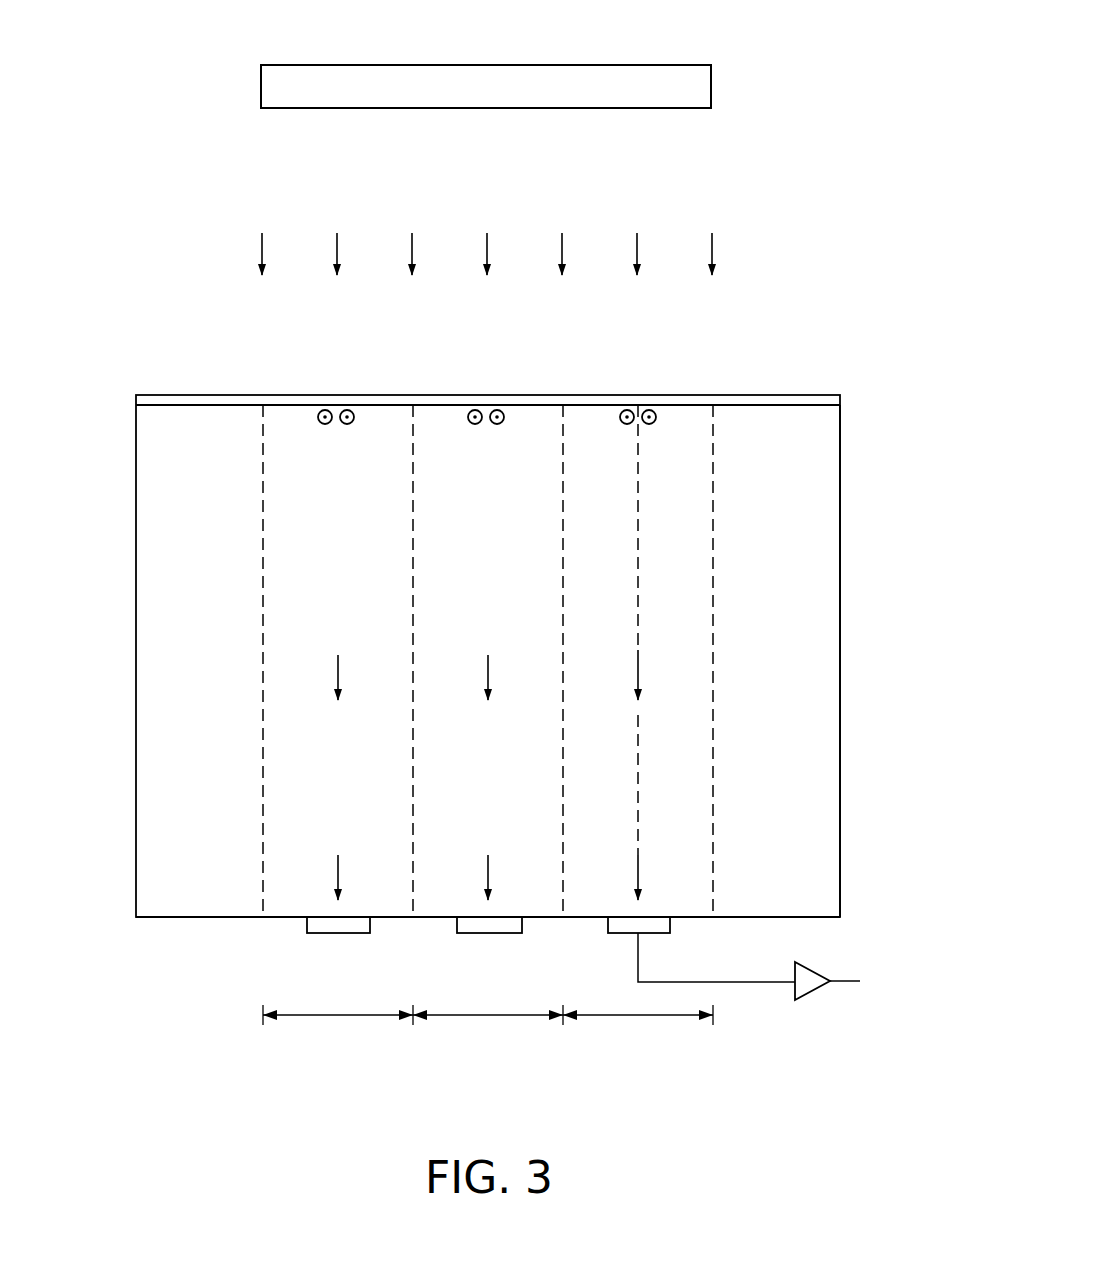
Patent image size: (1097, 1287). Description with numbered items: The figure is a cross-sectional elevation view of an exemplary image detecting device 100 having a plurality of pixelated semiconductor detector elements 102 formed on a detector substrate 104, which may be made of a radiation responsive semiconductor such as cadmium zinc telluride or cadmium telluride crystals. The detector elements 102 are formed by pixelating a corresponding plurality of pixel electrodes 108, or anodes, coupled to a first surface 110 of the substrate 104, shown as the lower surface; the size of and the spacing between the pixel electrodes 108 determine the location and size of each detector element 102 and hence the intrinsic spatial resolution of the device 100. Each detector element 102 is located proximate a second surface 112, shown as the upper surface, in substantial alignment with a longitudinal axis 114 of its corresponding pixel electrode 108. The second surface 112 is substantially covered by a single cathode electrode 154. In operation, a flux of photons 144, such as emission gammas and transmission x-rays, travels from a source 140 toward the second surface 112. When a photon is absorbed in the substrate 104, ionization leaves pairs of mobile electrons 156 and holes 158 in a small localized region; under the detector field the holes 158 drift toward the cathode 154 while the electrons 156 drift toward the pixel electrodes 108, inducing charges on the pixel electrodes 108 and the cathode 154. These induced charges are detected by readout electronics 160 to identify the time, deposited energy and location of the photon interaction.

The image detecting device 100 is at (182, 352).
The pixelated semiconductor detector element 102 is at (340, 1017).
The detector substrate 104 is at (840, 683).
The pixel electrode 108 is at (338, 934).
The first surface 110 is at (817, 920).
The second surface 112 is at (158, 406).
The longitudinal axis 114 is at (638, 712).
The source 140 is at (685, 65).
The photons 144 is at (337, 243).
The cathode electrode 154 is at (817, 393).
The electrons 156 is at (290, 825).
The holes 158 is at (315, 445).
The readout electronics 160 is at (770, 1025).